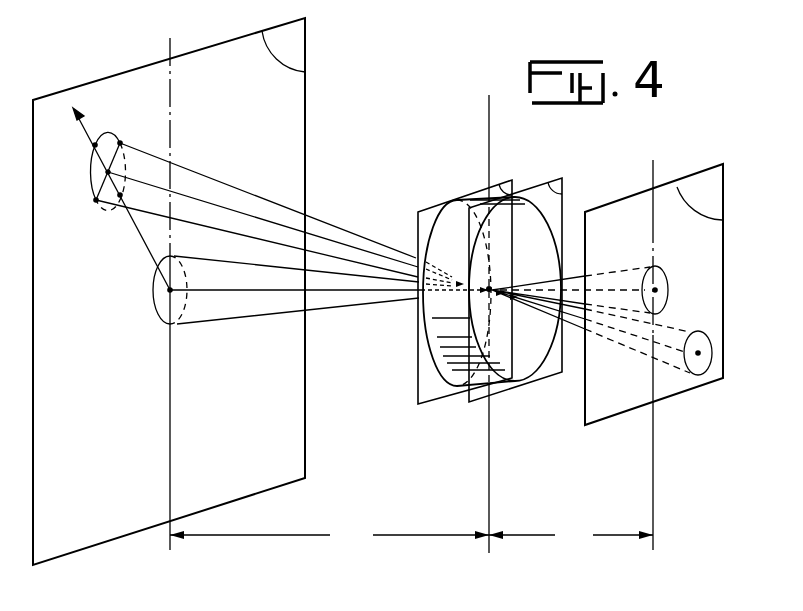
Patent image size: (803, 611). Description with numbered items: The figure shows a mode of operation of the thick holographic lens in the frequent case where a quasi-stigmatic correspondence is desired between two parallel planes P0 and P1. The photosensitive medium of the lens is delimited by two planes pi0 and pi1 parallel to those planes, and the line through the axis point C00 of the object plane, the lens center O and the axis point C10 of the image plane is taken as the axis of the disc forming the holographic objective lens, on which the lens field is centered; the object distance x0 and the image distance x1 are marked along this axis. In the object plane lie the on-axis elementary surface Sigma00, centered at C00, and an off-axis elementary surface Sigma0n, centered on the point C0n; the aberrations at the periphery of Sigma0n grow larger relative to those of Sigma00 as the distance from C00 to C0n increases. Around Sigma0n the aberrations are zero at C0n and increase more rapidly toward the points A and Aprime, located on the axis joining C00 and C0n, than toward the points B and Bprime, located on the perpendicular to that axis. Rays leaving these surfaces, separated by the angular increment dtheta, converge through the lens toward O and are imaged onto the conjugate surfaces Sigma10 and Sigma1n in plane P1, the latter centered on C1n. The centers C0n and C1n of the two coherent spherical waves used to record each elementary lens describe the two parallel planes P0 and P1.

The object plane P0 is at (169, 291).
The image plane P1 is at (654, 294).
The front delimiting plane of photosensitive medium pi0 is at (505, 184).
The rear delimiting plane of photosensitive medium pi1 is at (564, 184).
The off-axis elementary surface Sigma0n is at (93, 170).
The on-axis elementary surface Sigma00 is at (152, 292).
The center of off-axis elementary surface C0n is at (110, 172).
The axis point of object plane C00 is at (176, 324).
The on-axis image elementary surface Sigma10 is at (677, 265).
The off-axis image elementary surface Sigma1n is at (693, 375).
The axis point of image plane C10 is at (653, 289).
The center of image recording wave C1n is at (690, 342).
The point A is at (84, 150).
The point A' Aprime is at (133, 199).
The point B is at (94, 214).
The point B' Bprime is at (130, 128).
The lens center O is at (499, 272).
The angular increment dtheta is at (328, 249).
The object distance x0 is at (329, 541).
The image distance x1 is at (571, 541).